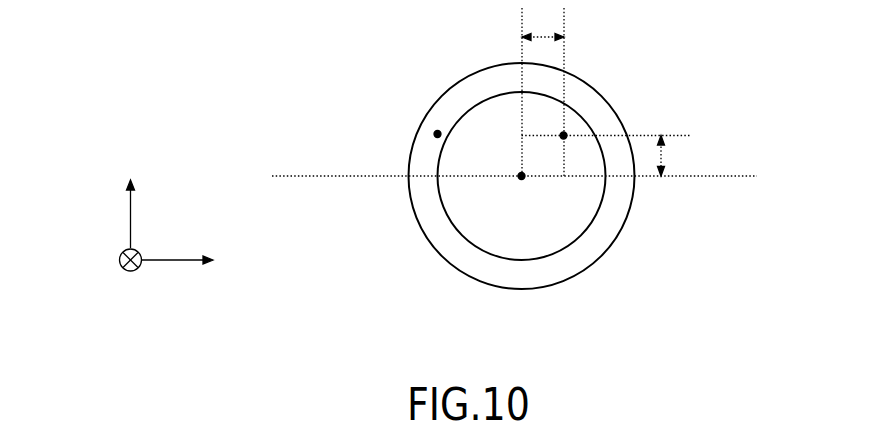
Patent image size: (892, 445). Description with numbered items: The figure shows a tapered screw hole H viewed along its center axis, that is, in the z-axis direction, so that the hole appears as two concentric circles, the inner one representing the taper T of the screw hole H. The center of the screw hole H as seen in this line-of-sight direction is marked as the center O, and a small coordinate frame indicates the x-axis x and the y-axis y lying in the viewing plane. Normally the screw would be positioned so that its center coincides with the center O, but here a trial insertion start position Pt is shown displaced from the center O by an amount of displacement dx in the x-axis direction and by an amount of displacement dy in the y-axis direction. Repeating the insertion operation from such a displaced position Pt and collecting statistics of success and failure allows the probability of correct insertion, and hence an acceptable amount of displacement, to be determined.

The screw hole H is at (483, 172).
The taper T is at (468, 176).
The position Pt is at (637, 97).
The center O is at (441, 236).
The amount of displacement in the x-axis direction dx is at (543, 92).
The amount of displacement in the y-axis direction dy is at (609, 156).
The x-axis x is at (176, 260).
The y-axis y is at (130, 199).